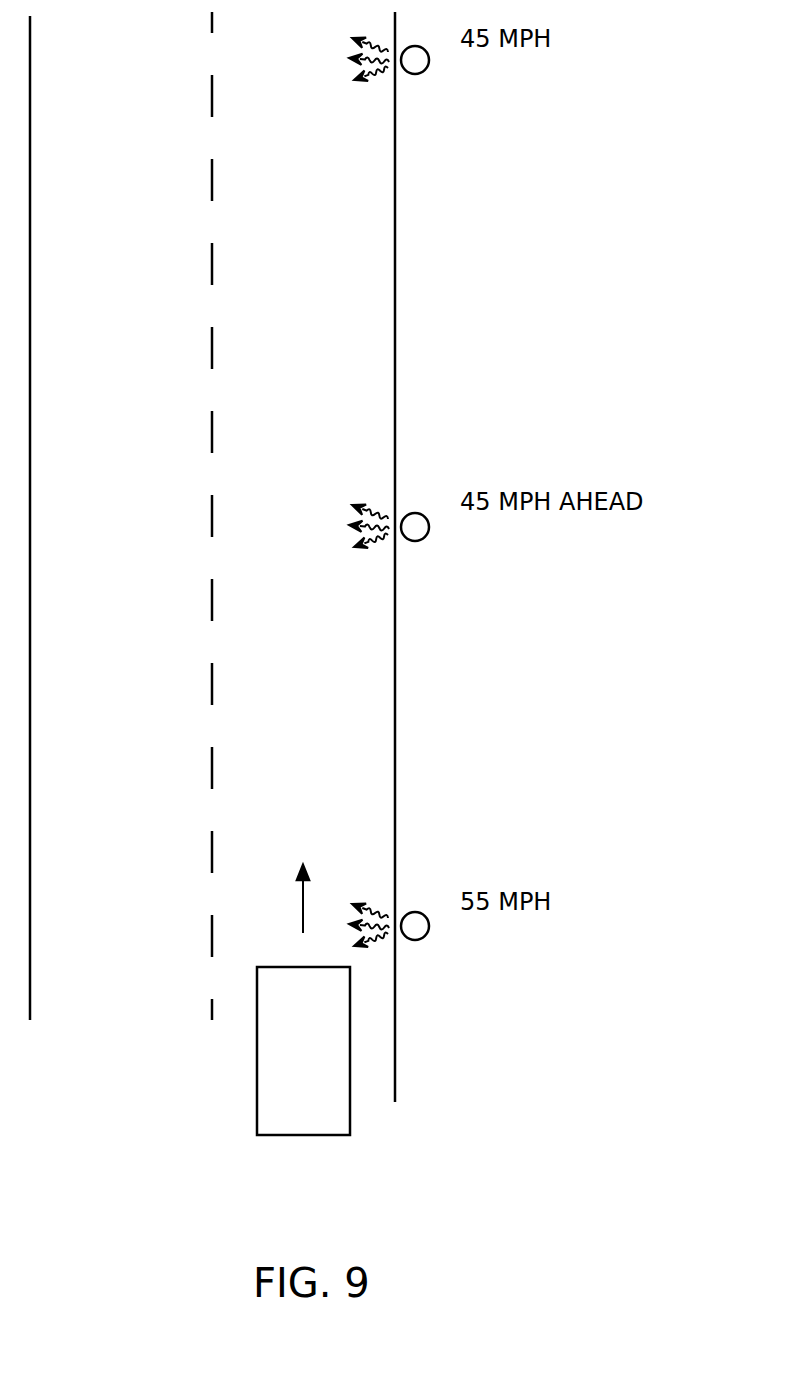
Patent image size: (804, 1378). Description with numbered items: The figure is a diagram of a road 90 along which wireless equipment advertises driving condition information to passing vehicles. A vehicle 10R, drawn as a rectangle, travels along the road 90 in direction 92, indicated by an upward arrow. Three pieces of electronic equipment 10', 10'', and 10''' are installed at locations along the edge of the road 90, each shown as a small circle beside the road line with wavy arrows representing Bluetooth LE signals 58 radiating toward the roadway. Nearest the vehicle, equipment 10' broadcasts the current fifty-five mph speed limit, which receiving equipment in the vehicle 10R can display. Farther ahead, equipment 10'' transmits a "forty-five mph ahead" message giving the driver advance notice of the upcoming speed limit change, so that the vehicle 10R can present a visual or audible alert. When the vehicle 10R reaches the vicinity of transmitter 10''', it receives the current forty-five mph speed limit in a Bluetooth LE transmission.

The electronic equipment 10' is at (440, 947).
The electronic equipment 10'' is at (444, 549).
The electronic equipment 10''' is at (447, 82).
The vehicle 10R is at (291, 1133).
The Bluetooth LE signals 58 is at (382, 70).
The road 90 is at (385, 347).
The direction 92 is at (305, 908).